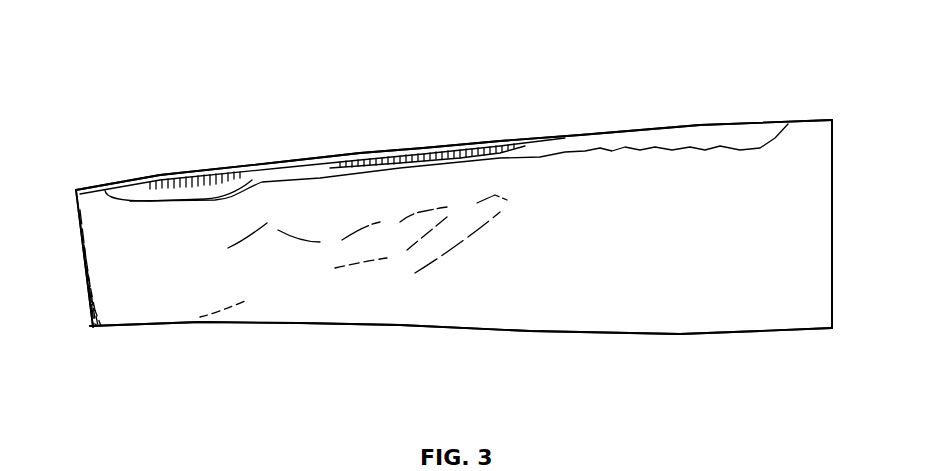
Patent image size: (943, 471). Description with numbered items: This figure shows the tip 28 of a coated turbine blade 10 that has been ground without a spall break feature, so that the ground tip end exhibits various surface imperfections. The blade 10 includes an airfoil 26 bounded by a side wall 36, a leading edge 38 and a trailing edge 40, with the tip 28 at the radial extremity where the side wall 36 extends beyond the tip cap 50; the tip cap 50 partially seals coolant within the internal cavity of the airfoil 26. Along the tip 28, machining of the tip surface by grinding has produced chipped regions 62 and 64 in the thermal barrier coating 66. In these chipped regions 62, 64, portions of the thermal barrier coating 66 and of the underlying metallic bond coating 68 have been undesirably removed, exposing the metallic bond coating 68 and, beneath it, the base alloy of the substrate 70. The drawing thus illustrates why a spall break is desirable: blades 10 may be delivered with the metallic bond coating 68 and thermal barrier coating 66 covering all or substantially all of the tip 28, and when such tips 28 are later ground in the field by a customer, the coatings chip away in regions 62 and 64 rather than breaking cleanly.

The turbine blade 10 is at (538, 76).
The airfoil 26 is at (514, 330).
The tip 28 is at (836, 160).
The side wall 36 is at (737, 313).
The leading edge 38 is at (84, 286).
The trailing edge 40 is at (834, 265).
The tip cap 50 is at (118, 180).
The chipped region 62 is at (255, 186).
The chipped region 64 is at (188, 182).
The thermal barrier coating 66 is at (300, 297).
The metallic bond coating 68 is at (268, 178).
The substrate 70 is at (155, 186).